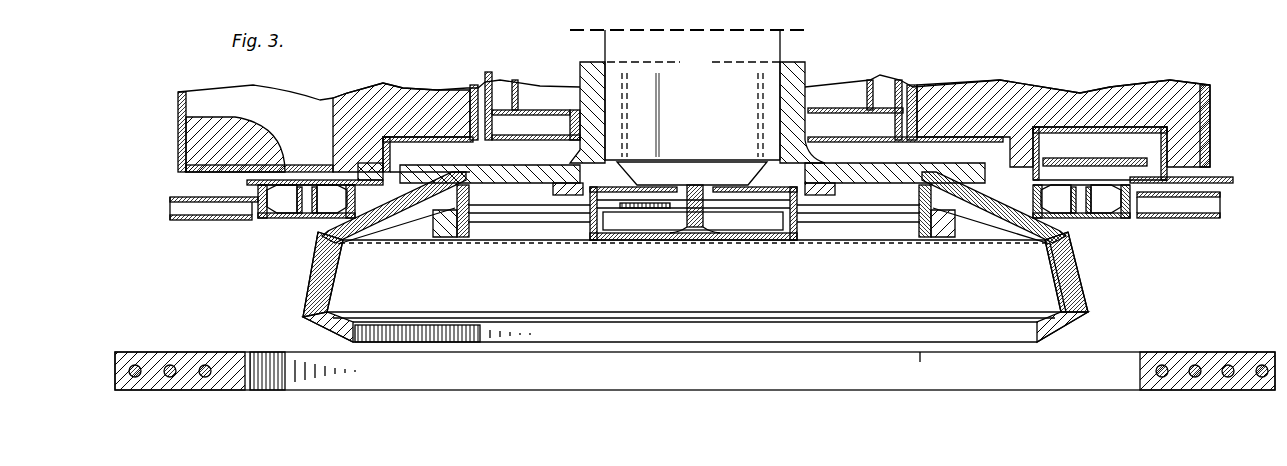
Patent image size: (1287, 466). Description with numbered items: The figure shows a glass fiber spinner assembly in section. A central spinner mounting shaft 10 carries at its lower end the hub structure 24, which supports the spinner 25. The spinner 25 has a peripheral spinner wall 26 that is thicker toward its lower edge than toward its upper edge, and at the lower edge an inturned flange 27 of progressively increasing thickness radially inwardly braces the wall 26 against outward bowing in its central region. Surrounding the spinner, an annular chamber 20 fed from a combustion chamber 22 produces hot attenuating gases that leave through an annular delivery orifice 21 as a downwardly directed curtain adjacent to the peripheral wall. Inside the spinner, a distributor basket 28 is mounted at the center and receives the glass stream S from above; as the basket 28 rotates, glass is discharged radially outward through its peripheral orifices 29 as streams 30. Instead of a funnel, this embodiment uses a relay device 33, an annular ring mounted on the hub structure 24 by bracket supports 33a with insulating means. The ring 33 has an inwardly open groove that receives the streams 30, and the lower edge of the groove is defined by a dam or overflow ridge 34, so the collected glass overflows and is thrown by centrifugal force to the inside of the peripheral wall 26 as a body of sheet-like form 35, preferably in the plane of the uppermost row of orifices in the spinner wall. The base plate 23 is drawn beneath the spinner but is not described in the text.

The central spinner mounting shaft 10 is at (664, 46).
The glass stream S is at (693, 186).
The annular chamber 20 is at (305, 190).
The annular delivery orifice 21 is at (304, 224).
The combustion chamber 22 is at (283, 113).
The base plate / floor 23 is at (1210, 352).
The hub structure 24 is at (807, 68).
The spinner 25 is at (1072, 313).
The peripheral spinner wall 26 is at (1075, 268).
The inturned flange 27 is at (1063, 330).
The distributor basket 28 is at (712, 241).
The peripheral orifices 29 is at (585, 212).
The streams of glass 30 is at (853, 224).
The relay device 33 is at (932, 240).
The bracket supports 33a is at (380, 231).
The dam or overflow ridge 34 is at (458, 240).
The body of sheet-like form 35 is at (985, 245).